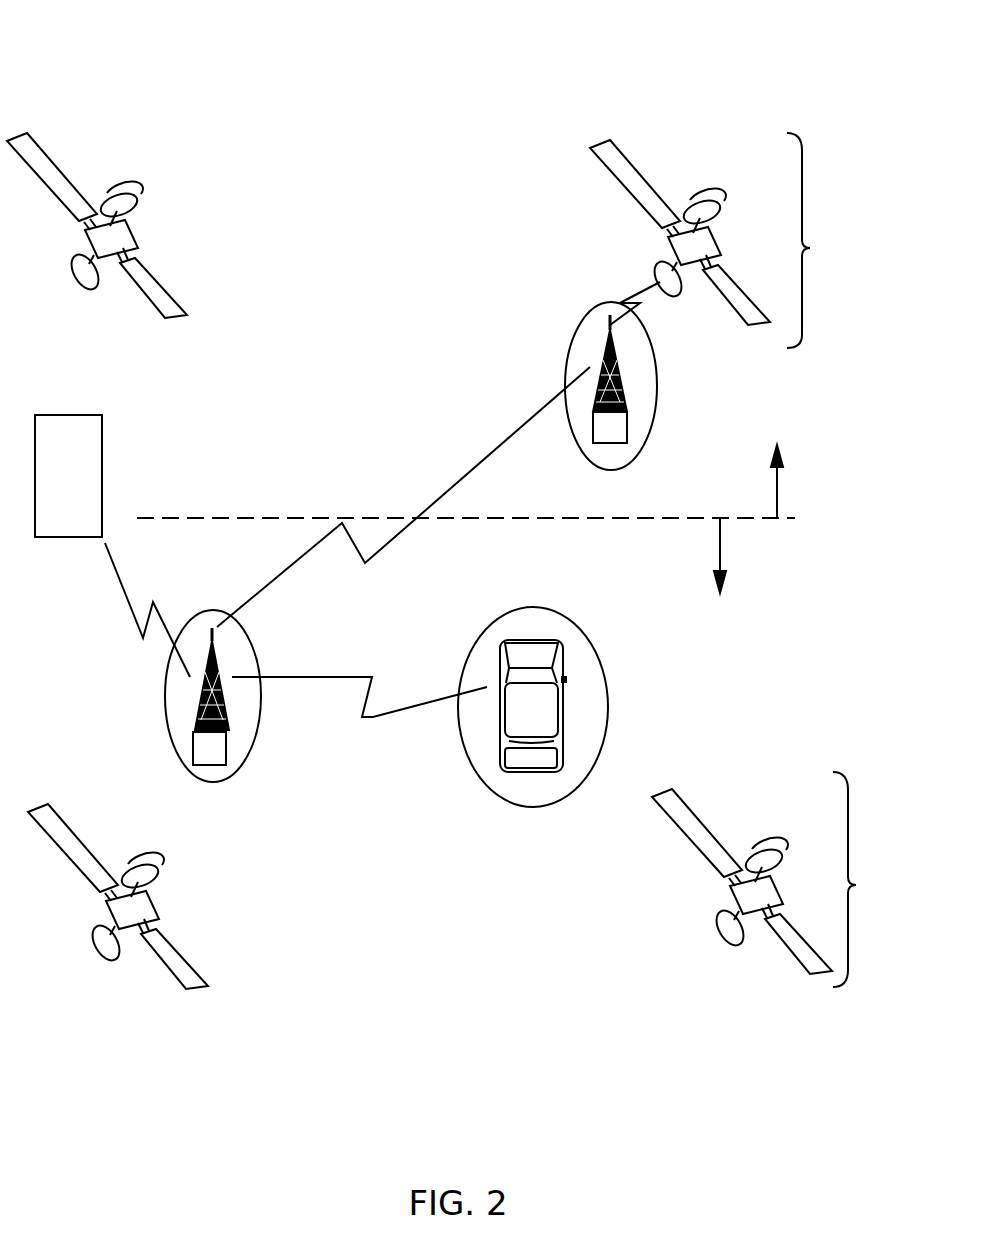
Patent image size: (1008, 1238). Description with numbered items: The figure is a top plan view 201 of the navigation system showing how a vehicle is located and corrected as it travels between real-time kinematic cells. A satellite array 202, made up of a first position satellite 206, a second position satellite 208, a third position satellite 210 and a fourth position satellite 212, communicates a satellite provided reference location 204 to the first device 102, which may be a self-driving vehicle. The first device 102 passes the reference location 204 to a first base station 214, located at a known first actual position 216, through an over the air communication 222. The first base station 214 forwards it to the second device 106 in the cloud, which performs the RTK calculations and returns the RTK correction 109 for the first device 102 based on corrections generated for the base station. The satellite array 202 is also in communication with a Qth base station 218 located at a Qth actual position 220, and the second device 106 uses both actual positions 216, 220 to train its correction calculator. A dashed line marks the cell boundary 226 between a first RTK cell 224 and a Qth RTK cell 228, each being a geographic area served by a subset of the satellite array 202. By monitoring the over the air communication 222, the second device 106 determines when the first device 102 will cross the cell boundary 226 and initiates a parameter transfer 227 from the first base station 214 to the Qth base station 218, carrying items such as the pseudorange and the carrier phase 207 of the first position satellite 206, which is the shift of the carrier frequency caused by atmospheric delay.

The top plan view 201 is at (116, 42).
The first device 102 is at (533, 723).
The second device 106 is at (56, 458).
The RTK correction 109 is at (117, 573).
The satellite array 202 is at (808, 248).
The satellite provided reference location 204 is at (657, 385).
The first position satellite 206 is at (697, 247).
The carrier phase 207 is at (640, 287).
The second position satellite 208 is at (122, 250).
The third position satellite 210 is at (137, 907).
The fourth position satellite 212 is at (742, 902).
The first base station 214 is at (217, 668).
The first actual position 216 is at (202, 750).
The Qth base station 218 is at (595, 368).
The Qth actual position 220 is at (610, 423).
The over the air (OTA) communication 222 is at (368, 718).
The first RTK cell 224 is at (718, 555).
The cell boundary 226 is at (207, 518).
The parameter transfer 227 is at (478, 462).
The Qth RTK cell 228 is at (777, 499).